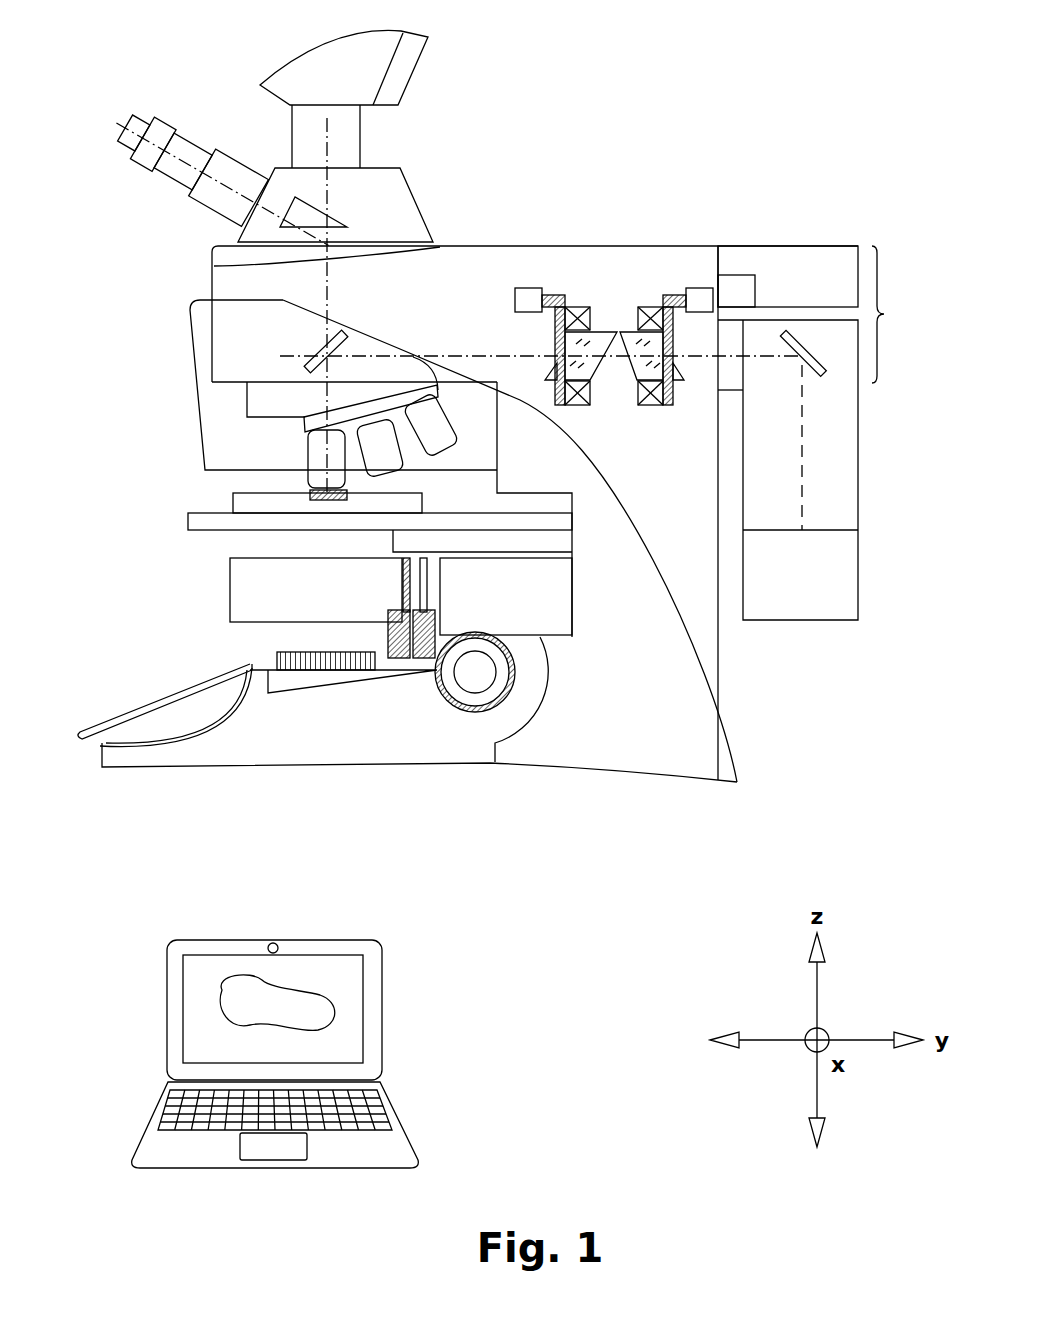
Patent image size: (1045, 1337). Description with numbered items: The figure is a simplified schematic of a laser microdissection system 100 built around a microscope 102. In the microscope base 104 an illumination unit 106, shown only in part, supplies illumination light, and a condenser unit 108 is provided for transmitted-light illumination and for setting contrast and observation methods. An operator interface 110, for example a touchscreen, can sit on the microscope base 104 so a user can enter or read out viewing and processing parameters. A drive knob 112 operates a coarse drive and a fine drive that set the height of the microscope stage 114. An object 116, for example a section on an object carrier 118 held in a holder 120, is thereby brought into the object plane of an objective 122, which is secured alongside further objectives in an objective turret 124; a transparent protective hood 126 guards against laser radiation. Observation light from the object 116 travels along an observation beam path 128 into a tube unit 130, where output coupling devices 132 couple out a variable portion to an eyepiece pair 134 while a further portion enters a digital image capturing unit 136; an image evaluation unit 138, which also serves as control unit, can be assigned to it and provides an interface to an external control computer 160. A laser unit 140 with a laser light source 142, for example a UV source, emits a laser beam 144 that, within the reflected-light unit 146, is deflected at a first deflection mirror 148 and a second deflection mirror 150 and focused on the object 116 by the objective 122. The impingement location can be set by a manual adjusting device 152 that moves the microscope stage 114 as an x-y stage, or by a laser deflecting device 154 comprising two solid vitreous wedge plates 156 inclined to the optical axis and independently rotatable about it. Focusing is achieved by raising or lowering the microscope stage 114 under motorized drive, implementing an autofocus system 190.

The laser microdissection system 100 is at (800, 118).
The microscope 102 is at (775, 746).
The microscope base 104 is at (408, 745).
The illumination unit 106 is at (277, 655).
The condenser unit 108 is at (240, 565).
The operator interface 110 is at (126, 705).
The drive knob 112 is at (496, 697).
The microscope stage 114 is at (188, 514).
The object 116 is at (336, 493).
The object carrier 118 is at (323, 493).
The holder 120 is at (236, 493).
The objective 122 is at (309, 448).
The objective turret 124 is at (412, 346).
The protective hood 126 is at (193, 333).
The observation beam path 128 is at (328, 303).
The tube unit 130 is at (400, 170).
The output coupling devices 132 is at (334, 221).
The eyepiece pair 134 is at (171, 121).
The digital image capturing unit 136 is at (400, 72).
The image evaluation unit 138 is at (790, 262).
The laser unit 140 is at (843, 497).
The laser light source 142 is at (807, 610).
The laser beam 144 is at (802, 420).
The reflected-light unit 146 is at (901, 314).
The first deflection mirror 148 is at (807, 353).
The second deflection mirror 150 is at (307, 358).
The manual adjusting device 152 is at (410, 586).
The laser deflecting device 154 is at (614, 308).
The wedge plates 156 is at (610, 332).
The external control computer 160 is at (405, 1012).
The autofocus system 190 is at (732, 288).